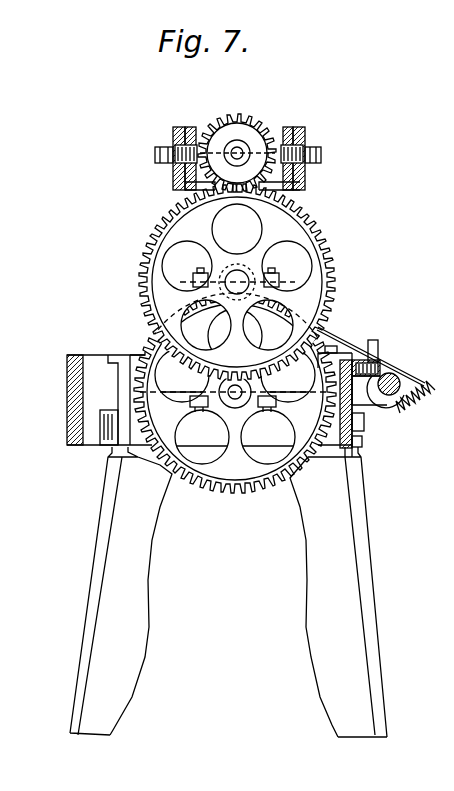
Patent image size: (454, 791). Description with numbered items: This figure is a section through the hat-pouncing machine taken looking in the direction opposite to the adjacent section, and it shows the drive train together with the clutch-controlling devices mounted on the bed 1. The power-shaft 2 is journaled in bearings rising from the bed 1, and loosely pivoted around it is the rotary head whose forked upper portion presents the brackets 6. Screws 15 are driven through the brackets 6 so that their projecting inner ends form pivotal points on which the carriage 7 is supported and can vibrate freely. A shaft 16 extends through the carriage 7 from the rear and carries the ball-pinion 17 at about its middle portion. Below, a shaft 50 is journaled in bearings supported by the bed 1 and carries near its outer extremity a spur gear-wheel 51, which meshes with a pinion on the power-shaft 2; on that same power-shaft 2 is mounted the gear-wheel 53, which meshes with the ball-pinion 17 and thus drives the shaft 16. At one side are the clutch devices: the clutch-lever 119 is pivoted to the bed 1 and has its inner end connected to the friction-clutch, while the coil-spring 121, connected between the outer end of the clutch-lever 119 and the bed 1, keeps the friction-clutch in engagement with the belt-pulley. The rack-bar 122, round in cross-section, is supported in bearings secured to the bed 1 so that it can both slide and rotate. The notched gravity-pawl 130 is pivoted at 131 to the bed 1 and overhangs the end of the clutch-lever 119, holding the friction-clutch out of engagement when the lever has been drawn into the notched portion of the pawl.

The bed 1 is at (67, 357).
The power-shaft 2 is at (258, 275).
The brackets 6 is at (180, 127).
The carriage 7 is at (190, 127).
The screws 15 is at (170, 143).
The shaft 16 is at (233, 147).
The ball-pinion 17 is at (252, 122).
The shaft 50 is at (243, 392).
The spur gear-wheel 51 is at (143, 353).
The gear-wheel 53 is at (323, 280).
The clutch-lever 119 is at (380, 365).
The coil-spring 121 is at (417, 405).
The rack-bar 122 is at (392, 380).
The notched gravity-pawl 130 is at (372, 340).
The pivot 131 is at (372, 402).